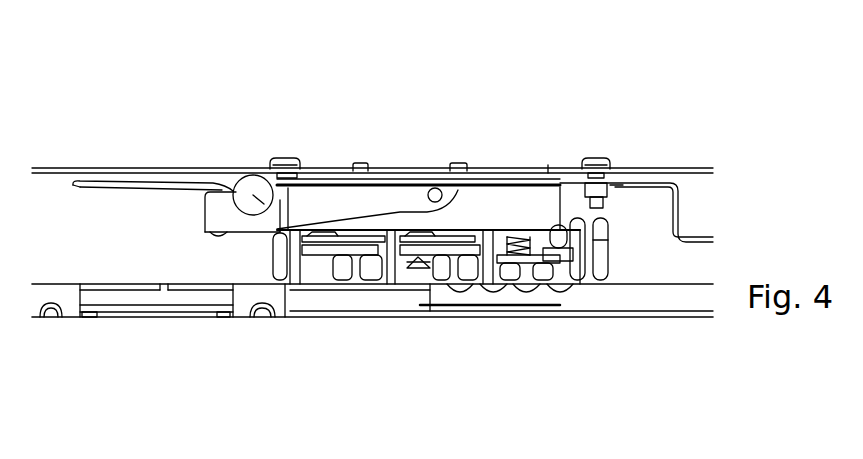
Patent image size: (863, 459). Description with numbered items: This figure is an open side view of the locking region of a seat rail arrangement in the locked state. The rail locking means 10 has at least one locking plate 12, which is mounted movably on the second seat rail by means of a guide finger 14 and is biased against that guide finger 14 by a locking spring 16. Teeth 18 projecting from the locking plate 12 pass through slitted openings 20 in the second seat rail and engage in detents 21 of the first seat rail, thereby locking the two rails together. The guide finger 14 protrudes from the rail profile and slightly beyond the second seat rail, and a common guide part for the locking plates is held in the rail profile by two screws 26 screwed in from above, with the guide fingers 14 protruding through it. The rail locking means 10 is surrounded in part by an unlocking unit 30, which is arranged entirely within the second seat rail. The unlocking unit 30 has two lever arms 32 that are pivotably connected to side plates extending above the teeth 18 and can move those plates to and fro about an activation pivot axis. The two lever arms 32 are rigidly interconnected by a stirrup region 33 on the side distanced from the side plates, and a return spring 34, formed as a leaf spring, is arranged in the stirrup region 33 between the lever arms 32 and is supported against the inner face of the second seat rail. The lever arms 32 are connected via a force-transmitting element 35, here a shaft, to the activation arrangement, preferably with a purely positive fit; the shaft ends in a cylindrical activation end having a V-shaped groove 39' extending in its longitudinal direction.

The rail locking means 10 is at (355, 268).
The locking plate 12 is at (338, 250).
The guide finger 14 is at (368, 170).
The locking spring 16 is at (523, 250).
The teeth 18 is at (373, 250).
The slitted openings 20 is at (572, 235).
The detents 21 is at (380, 250).
The screws 26 is at (287, 158).
The unlocking unit 30 is at (412, 197).
The lever arms 32 is at (344, 190).
The stirrup region 33 is at (215, 212).
The return spring 34 is at (150, 181).
The force-transmitting element 35 is at (253, 195).
The V-shaped groove 39' is at (300, 299).